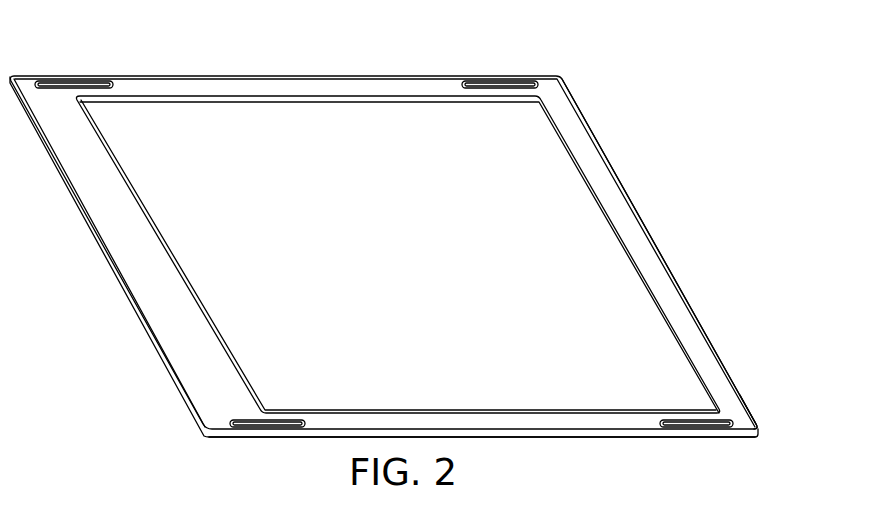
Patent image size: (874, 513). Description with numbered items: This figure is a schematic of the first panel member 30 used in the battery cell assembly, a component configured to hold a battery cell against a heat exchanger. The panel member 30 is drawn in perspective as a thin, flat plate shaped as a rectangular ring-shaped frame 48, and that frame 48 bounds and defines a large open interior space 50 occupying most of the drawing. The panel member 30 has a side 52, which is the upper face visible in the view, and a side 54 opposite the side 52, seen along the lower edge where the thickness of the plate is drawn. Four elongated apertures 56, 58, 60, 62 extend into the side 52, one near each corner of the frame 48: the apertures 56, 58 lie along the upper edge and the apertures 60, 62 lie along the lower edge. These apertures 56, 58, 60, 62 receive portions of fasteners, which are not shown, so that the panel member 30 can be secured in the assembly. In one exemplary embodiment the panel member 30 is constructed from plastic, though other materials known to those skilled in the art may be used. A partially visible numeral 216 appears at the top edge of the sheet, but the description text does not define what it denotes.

The panel member 30 is at (597, 136).
The rectangular ring-shaped frame 48 is at (630, 223).
The interior space 50 is at (402, 258).
The side 52 is at (725, 397).
The side 54 is at (716, 438).
The aperture 56 is at (66, 80).
The aperture 58 is at (496, 82).
The aperture 60 is at (275, 424).
The aperture 62 is at (687, 424).
The portion 216 is at (151, 6).